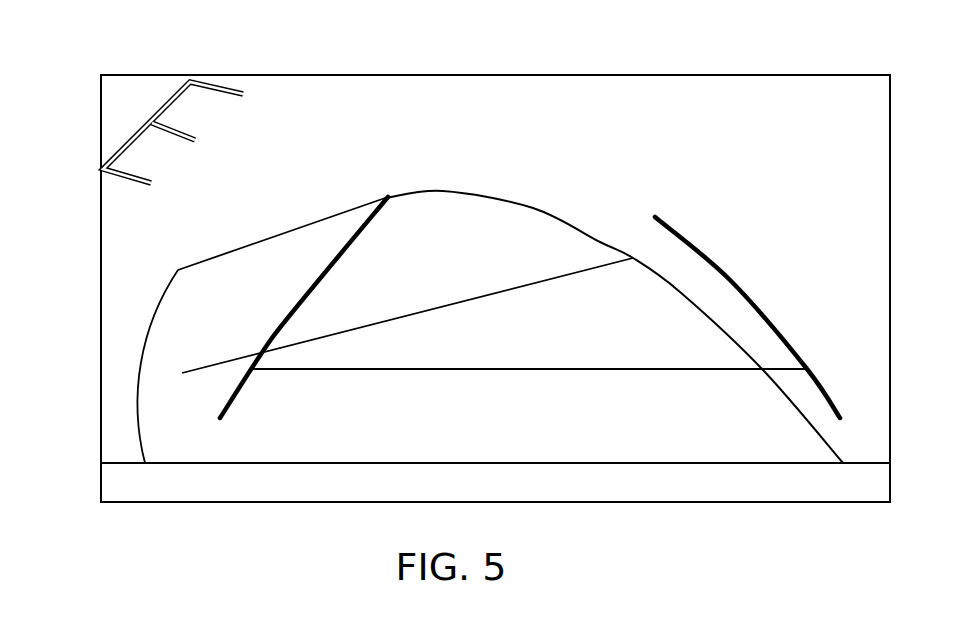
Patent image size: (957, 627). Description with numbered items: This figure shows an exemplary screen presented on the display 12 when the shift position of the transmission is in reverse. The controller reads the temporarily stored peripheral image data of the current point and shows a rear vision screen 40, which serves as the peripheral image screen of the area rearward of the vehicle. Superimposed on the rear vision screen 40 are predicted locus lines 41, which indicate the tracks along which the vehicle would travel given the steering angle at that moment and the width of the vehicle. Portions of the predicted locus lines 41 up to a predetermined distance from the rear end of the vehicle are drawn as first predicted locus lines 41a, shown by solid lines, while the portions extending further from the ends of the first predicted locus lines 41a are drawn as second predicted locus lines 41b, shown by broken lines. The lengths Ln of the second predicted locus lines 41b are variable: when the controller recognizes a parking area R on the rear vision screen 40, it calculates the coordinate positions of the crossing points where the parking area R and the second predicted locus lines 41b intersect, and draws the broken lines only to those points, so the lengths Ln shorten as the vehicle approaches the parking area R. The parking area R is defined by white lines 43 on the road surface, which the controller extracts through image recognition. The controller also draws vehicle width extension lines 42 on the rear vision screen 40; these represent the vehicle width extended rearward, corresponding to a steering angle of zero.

The display 12 is at (652, 73).
The rear vision screen 40 is at (825, 88).
The predicted locus lines 41 is at (467, 127).
The first predicted locus lines 41a is at (460, 192).
The second predicted locus lines 41b is at (378, 181).
The vehicle width extension lines 42 is at (348, 244).
The white lines 43 is at (142, 104).
The parking area R is at (147, 153).
The lengths of the second predicted locus lines Ln is at (388, 198).